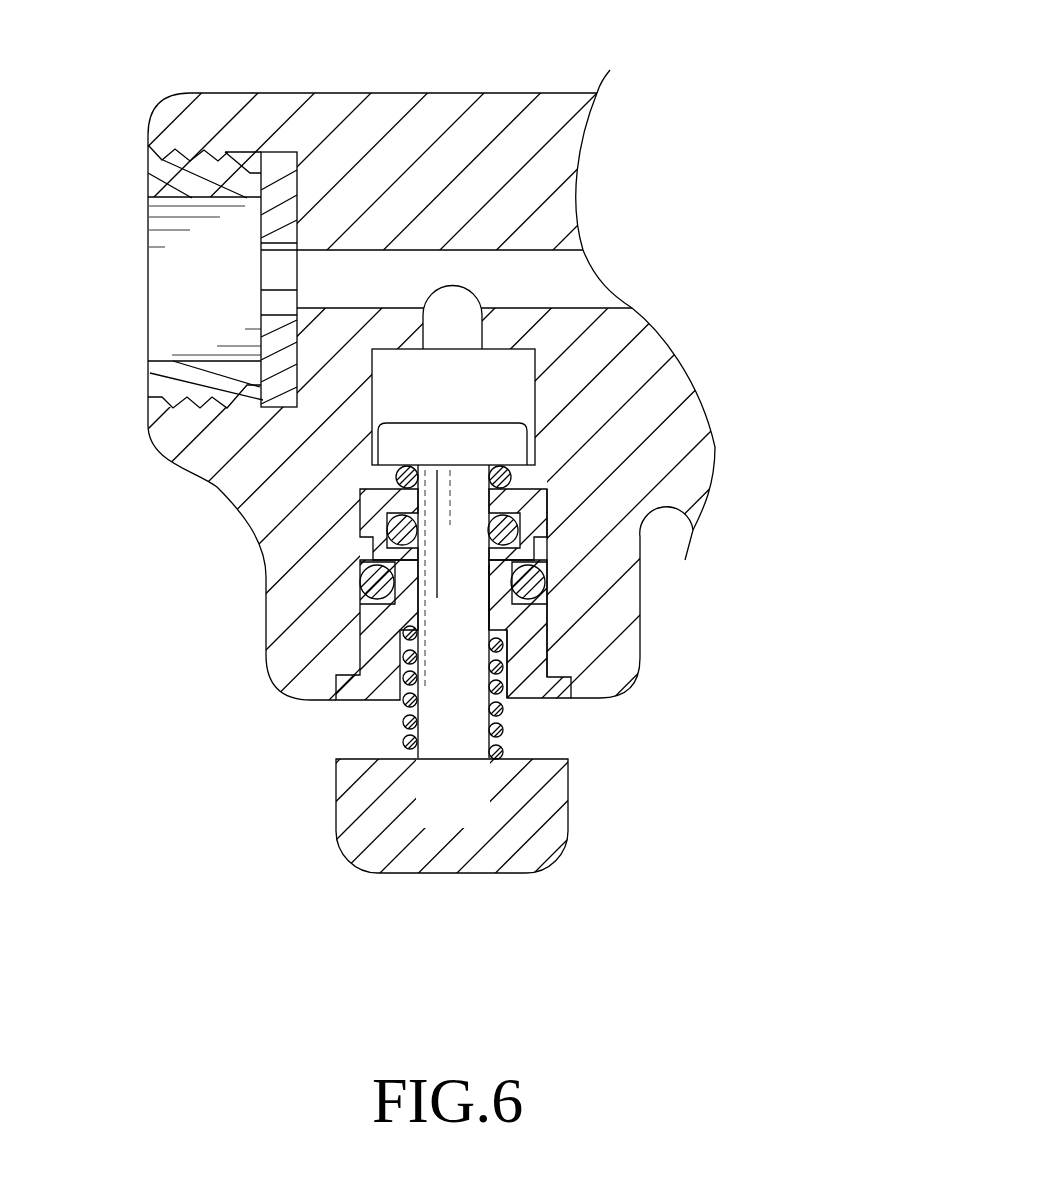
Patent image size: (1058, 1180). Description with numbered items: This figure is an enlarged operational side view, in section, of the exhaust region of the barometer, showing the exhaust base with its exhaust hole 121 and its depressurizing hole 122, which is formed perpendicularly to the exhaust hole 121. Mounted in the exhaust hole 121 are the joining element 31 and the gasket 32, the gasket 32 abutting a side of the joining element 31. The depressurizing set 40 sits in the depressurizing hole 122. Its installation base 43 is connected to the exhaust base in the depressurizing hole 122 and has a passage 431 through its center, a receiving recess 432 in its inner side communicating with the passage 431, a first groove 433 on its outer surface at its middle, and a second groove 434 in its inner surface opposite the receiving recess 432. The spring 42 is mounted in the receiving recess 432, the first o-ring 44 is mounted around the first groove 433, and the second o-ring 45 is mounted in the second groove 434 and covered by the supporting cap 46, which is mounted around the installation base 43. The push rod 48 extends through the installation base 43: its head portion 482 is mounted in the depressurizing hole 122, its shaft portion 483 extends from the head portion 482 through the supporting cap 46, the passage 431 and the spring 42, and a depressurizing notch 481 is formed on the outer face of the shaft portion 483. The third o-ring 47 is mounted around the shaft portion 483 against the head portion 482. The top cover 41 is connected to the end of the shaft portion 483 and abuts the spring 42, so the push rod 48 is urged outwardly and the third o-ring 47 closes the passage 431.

The gasket 32 is at (283, 167).
The exhaust hole 121 is at (175, 125).
The joining element 31 is at (173, 182).
The depressurizing hole 122 is at (380, 410).
The head portion 482 is at (535, 428).
The third o-ring 47 is at (512, 440).
The second groove 434 is at (513, 481).
The depressurizing notch 481 is at (546, 540).
The supporting cap 46 is at (367, 498).
The second o-ring 45 is at (392, 540).
The first groove 433 is at (372, 580).
The first o-ring 44 is at (378, 600).
The installation base 43 is at (370, 657).
The passage 431 is at (490, 600).
The receiving recess 432 is at (503, 673).
The spring 42 is at (407, 720).
The push rod 48 is at (482, 740).
The shaft portion 483 is at (450, 728).
The top cover 41 is at (373, 855).
The depressurizing set 40 is at (558, 898).